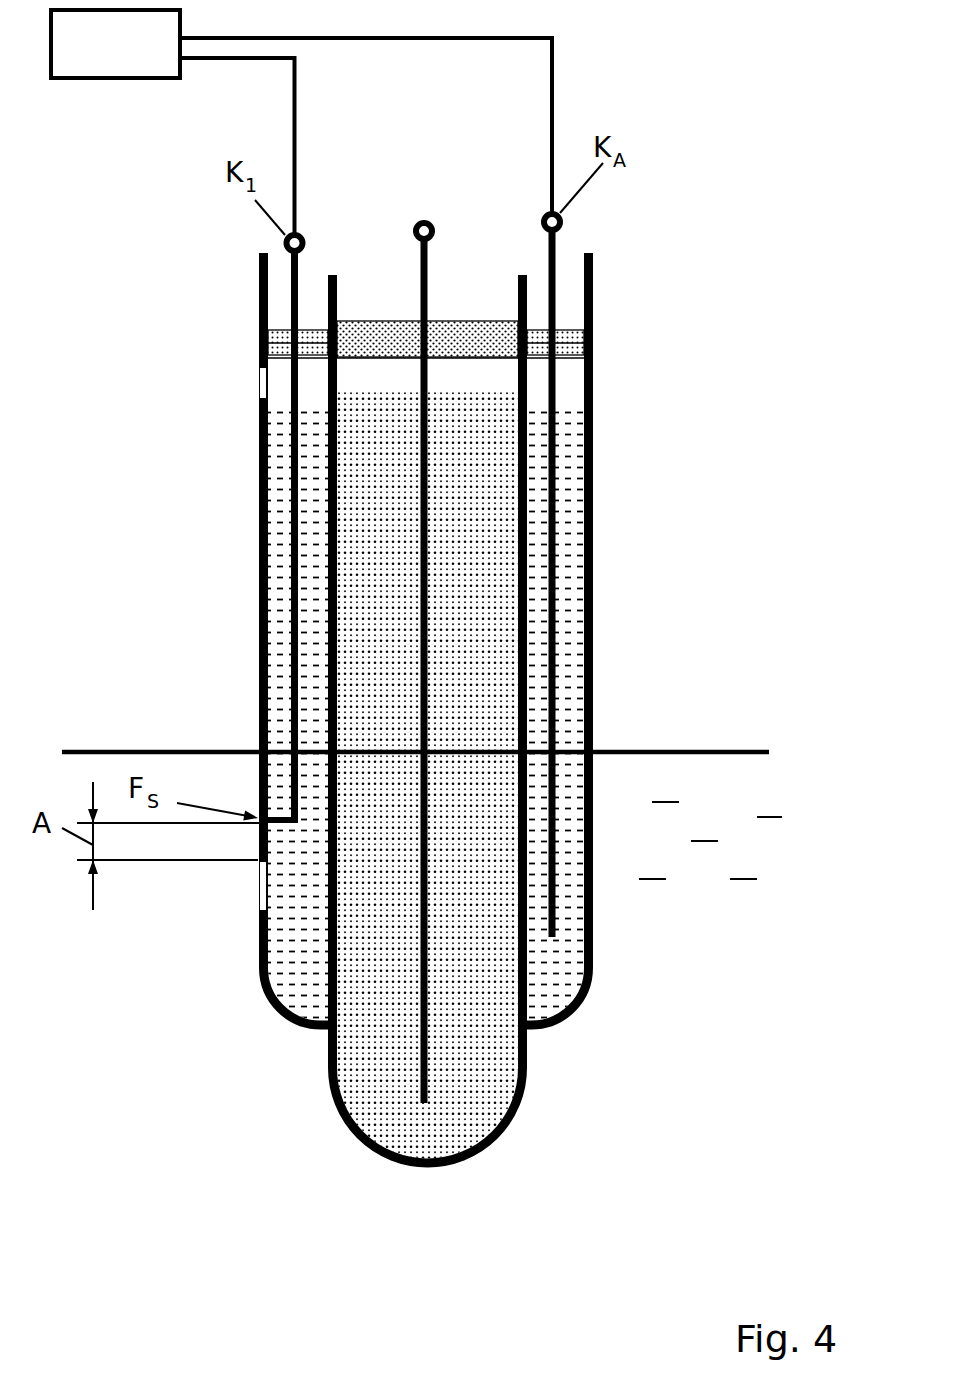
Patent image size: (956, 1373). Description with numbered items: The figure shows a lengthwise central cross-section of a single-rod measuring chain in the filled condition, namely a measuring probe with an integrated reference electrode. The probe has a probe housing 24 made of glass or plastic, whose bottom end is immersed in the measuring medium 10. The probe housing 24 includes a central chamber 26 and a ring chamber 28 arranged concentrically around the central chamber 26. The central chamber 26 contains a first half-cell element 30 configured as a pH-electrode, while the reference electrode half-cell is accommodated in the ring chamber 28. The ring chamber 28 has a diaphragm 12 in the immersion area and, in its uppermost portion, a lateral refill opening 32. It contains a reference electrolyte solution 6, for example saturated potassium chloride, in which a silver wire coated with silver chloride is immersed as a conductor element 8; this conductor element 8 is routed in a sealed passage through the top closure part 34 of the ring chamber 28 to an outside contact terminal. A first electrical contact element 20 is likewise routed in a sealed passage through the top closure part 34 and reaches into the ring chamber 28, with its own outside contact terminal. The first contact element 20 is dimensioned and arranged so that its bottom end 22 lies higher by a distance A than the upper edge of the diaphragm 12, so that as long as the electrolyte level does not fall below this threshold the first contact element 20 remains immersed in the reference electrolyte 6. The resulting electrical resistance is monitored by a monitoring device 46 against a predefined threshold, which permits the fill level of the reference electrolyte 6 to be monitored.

The reference electrolyte solution 6 is at (302, 980).
The conductor element 8 is at (556, 738).
The measuring medium 10 is at (720, 792).
The diaphragm 12 is at (263, 880).
The first electrical contact element 20 is at (292, 545).
The bottom end 22 is at (290, 800).
The probe housing 24 is at (662, 514).
The central chamber 26 is at (487, 1150).
The ring chamber 28 is at (288, 1022).
The first half-cell element 30 is at (380, 249).
The lateral refill opening 32 is at (260, 385).
The top closure part 34 is at (275, 333).
The monitoring device 46 is at (148, 63).